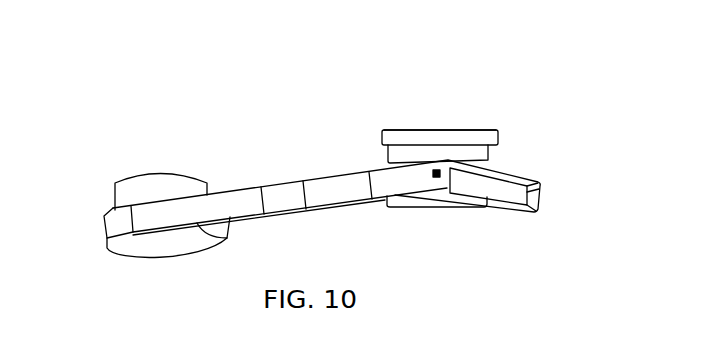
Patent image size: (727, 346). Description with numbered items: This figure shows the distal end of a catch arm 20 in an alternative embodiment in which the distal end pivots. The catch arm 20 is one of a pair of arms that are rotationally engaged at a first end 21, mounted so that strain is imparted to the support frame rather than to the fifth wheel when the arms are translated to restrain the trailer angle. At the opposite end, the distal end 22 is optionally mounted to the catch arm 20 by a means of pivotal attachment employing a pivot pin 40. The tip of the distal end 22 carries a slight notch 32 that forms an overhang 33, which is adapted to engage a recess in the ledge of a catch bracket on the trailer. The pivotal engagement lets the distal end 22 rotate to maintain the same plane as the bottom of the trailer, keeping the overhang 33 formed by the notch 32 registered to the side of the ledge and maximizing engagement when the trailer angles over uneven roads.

The catch arm 20 is at (237, 190).
The first end 21 is at (120, 222).
The distal end 22 is at (427, 128).
The overhang 33 is at (497, 130).
The notch 32 is at (490, 152).
The pivot pin 40 is at (440, 178).